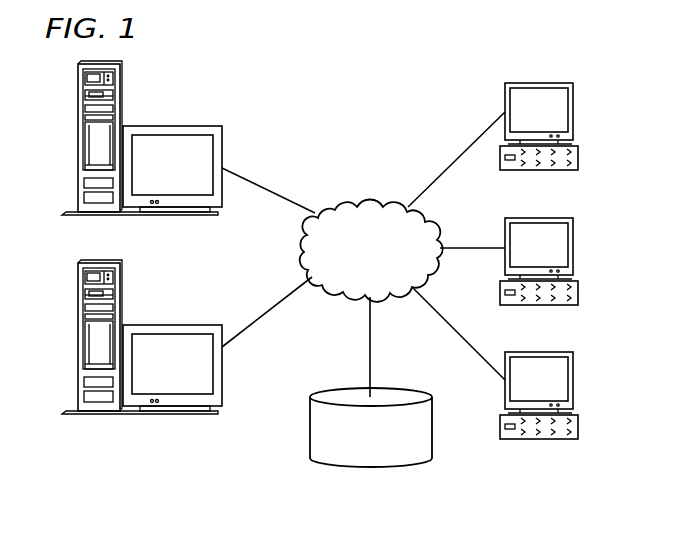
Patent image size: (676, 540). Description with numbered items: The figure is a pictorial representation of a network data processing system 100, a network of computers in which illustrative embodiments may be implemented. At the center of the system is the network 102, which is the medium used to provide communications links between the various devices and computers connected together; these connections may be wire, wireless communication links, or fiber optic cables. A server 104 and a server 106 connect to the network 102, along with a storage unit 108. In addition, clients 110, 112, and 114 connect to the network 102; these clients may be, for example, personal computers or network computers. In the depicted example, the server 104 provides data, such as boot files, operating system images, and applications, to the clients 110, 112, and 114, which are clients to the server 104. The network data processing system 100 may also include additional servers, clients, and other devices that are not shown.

The network data processing system 100 is at (417, 93).
The network 102 is at (345, 200).
The server 104 is at (78, 138).
The server 106 is at (78, 337).
The storage unit 108 is at (355, 467).
The client 110 is at (575, 112).
The client 112 is at (575, 247).
The client 114 is at (575, 380).